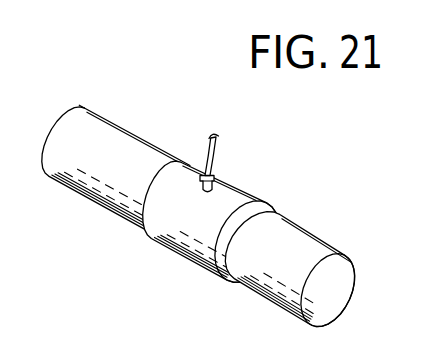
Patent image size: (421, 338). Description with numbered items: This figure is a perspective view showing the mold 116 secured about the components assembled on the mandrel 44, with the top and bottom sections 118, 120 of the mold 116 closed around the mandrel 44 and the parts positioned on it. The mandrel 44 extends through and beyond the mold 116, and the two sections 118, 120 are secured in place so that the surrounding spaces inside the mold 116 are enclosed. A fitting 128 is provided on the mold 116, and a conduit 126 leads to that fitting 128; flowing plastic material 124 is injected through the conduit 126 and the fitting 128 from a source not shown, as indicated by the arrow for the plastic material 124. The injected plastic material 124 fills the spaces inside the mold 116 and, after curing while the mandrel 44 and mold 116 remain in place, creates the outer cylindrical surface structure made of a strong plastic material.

The mandrel 44 is at (68, 107).
The mold 116 is at (281, 212).
The section of the mold 118 is at (182, 161).
The section of the mold 120 is at (149, 238).
The flowing plastic material 124 is at (214, 136).
The conduit 126 is at (215, 163).
The fitting 128 is at (215, 187).